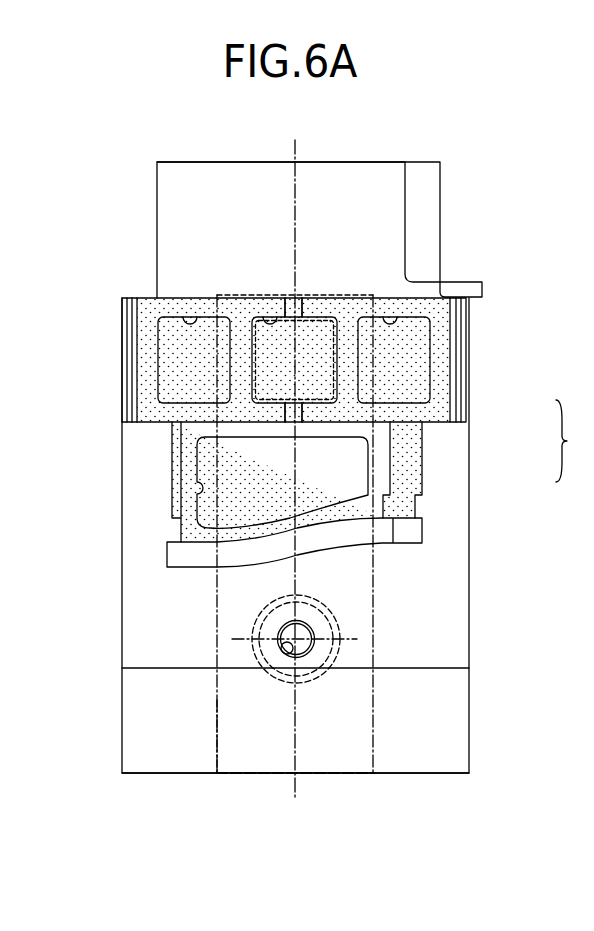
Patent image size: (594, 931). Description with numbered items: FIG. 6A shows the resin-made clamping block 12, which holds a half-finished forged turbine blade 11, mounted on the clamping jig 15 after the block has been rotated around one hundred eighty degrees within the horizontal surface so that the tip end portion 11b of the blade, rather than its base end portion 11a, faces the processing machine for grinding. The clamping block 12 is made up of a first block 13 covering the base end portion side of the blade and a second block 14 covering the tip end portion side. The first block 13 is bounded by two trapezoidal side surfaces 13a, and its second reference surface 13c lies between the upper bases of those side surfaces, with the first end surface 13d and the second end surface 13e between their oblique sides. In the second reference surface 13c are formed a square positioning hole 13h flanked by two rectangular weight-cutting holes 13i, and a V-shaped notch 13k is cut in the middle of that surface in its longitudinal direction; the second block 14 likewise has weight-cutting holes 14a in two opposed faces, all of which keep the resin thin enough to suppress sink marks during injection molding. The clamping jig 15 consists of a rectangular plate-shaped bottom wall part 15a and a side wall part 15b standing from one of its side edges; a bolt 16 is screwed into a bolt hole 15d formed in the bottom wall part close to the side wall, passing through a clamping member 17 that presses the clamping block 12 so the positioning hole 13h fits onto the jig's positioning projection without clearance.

The turbine blade 11 is at (378, 152).
The base end portion 11a is at (217, 182).
The tip end portion 11b is at (200, 558).
The resin-made clamping block 12 is at (572, 441).
The first block 13 is at (465, 383).
The side surface 13a is at (147, 297).
The second reference surface 13c is at (237, 300).
The first end surface 13d is at (467, 343).
The second end surface 13e is at (127, 357).
The positioning hole 13h is at (262, 315).
The weight-cutting hole 13i is at (182, 315).
The V-shaped notch 13k is at (299, 303).
The second block 14 is at (424, 482).
The weight-cutting hole 14a is at (200, 478).
The clamping jig 15 is at (480, 608).
The bottom wall part 15a is at (445, 562).
The side wall part 15b is at (455, 722).
The bolt hole 15d is at (280, 647).
The bolt 16 is at (320, 657).
The clamping member 17 is at (218, 732).